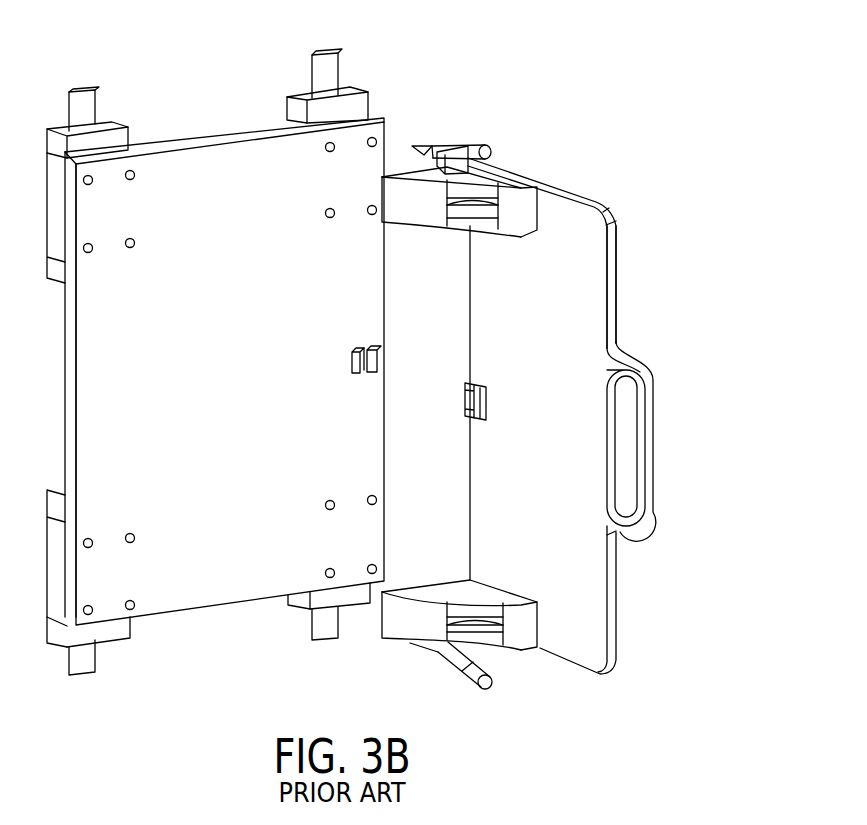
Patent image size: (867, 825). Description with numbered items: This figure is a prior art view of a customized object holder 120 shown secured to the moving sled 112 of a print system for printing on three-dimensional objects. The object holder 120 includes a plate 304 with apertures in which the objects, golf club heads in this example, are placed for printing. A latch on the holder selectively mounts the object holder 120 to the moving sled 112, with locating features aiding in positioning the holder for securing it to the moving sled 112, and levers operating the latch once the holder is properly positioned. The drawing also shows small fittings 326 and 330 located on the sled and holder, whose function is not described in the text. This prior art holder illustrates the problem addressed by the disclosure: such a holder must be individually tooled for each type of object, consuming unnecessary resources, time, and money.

The moving sled 112 is at (190, 86).
The object holder 120 is at (557, 390).
The plate 304 is at (598, 262).
The latch clip 326 is at (352, 369).
The retaining clip 330 is at (490, 400).